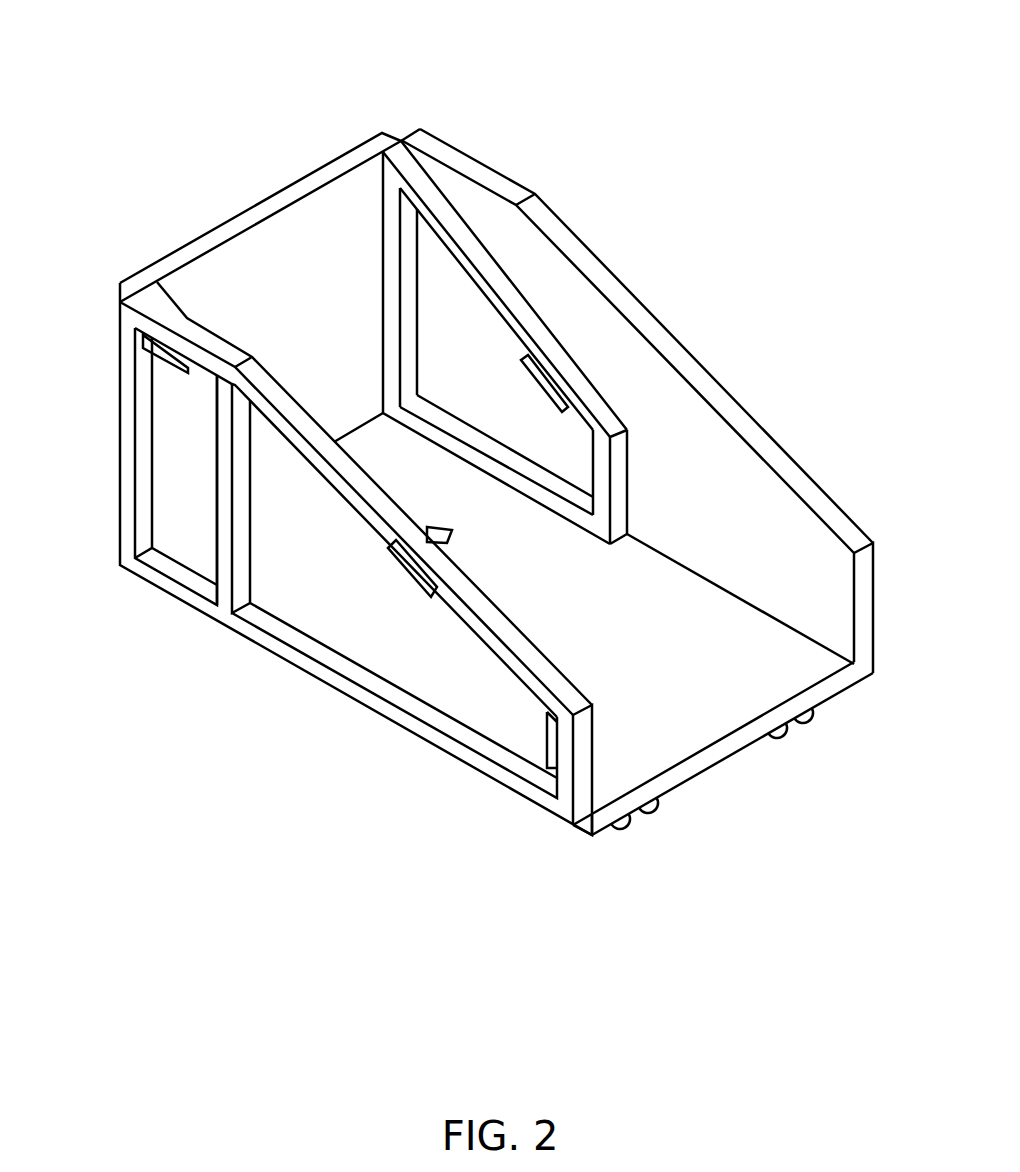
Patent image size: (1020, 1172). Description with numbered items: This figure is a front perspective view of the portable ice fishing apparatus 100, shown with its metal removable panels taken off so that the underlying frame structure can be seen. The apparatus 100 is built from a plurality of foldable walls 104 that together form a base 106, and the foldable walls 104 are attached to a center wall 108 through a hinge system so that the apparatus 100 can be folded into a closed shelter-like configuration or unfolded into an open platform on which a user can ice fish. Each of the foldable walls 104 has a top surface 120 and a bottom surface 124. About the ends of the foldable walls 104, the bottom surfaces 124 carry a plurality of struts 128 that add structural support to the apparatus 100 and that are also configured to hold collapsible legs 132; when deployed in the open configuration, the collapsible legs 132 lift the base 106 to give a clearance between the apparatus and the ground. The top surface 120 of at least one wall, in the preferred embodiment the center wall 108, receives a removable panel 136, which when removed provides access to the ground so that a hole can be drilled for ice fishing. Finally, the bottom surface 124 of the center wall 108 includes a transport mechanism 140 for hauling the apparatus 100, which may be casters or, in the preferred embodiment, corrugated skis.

The ice fishing apparatus 100 is at (118, 96).
The foldable walls 104 is at (305, 222).
The base 106 is at (583, 847).
The center wall 108 is at (740, 708).
The top surface 120 is at (718, 745).
The bottom surface 124 is at (722, 765).
The struts 128 is at (262, 640).
The collapsible legs 132 is at (163, 350).
The removable panel 136 is at (434, 527).
The transport mechanism 140 is at (783, 733).